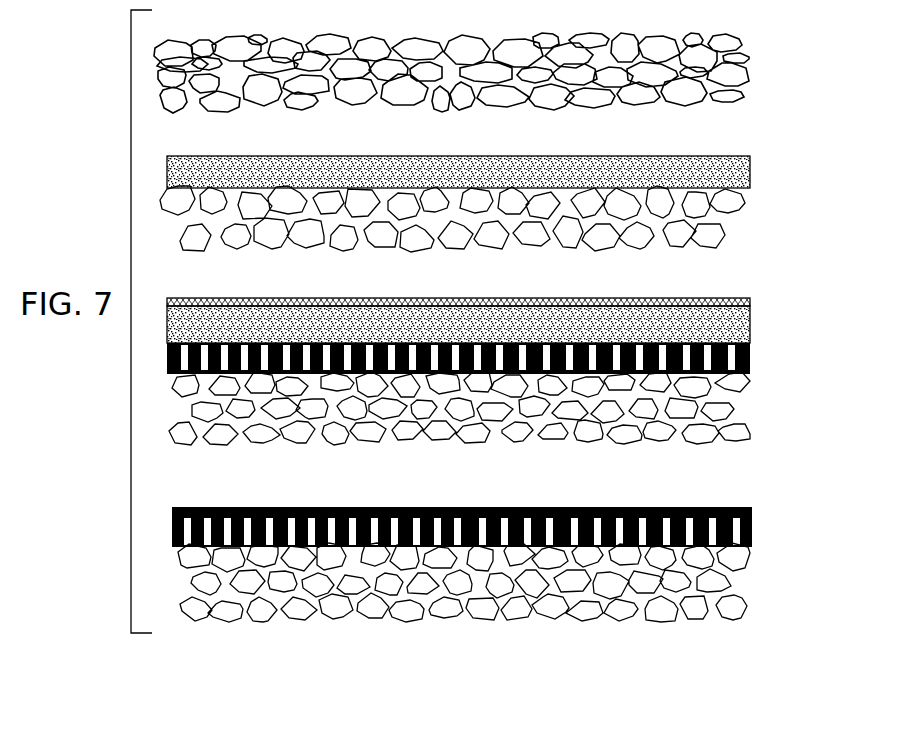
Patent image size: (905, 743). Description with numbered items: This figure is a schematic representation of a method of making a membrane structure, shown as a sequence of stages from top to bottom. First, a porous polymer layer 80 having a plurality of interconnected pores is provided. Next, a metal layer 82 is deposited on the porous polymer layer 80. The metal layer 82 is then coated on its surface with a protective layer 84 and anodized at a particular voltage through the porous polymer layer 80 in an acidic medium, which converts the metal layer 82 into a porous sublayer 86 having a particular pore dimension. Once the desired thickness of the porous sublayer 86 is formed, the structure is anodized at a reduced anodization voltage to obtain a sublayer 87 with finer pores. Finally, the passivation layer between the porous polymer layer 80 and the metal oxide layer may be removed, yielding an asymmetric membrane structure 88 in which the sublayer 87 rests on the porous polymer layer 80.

The porous polymer layer 80 is at (758, 40).
The metal layer 82 is at (750, 172).
The protective layer 84 is at (750, 303).
The porous sublayer 86 is at (751, 358).
The sublayer with finer pores 87 is at (750, 508).
The asymmetric membrane structure 88 is at (777, 504).